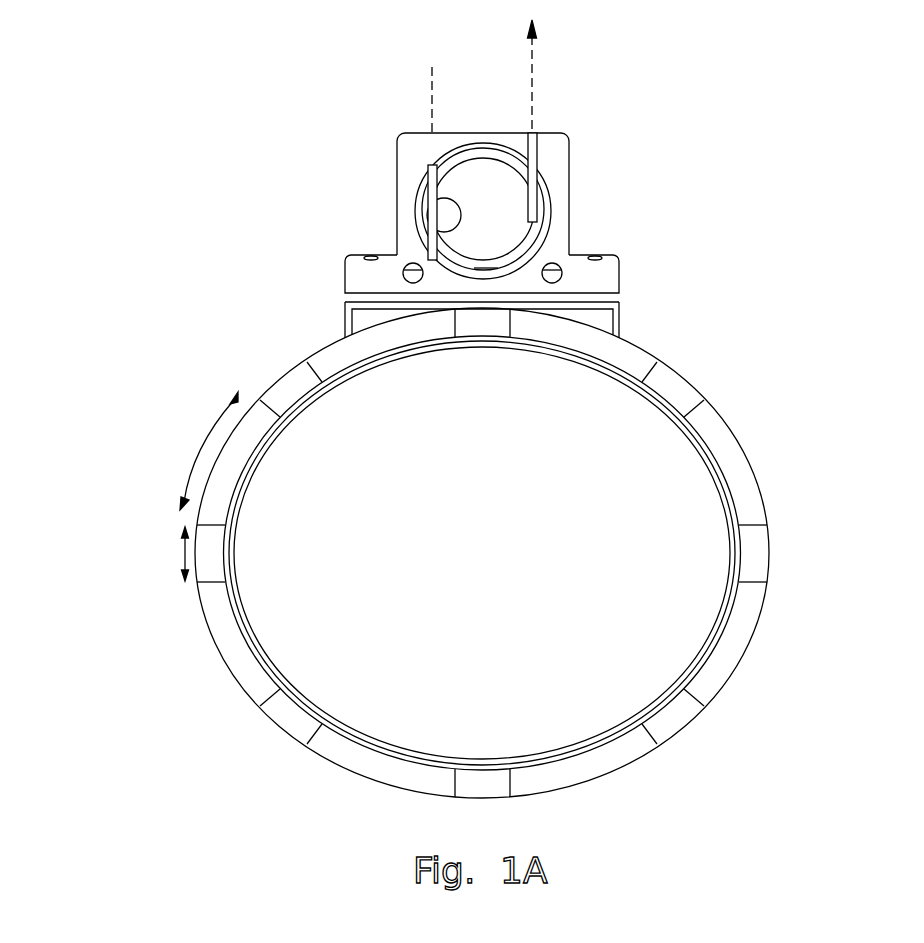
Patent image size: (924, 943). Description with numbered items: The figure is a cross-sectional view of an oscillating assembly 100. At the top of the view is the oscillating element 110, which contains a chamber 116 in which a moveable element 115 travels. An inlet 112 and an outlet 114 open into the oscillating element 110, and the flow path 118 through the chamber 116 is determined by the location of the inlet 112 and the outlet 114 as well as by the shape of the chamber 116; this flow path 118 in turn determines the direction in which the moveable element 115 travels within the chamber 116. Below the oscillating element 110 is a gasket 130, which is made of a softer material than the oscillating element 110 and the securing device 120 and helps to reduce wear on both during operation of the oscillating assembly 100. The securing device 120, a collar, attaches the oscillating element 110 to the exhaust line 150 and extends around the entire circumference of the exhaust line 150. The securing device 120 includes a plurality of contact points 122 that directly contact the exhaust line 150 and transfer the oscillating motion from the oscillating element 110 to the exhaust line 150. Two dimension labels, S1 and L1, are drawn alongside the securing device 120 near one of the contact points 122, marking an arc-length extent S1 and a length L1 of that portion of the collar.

The oscillating assembly 100 is at (478, 409).
The oscillating element 110 is at (476, 156).
The inlet 112 is at (430, 132).
The outlet 114 is at (537, 132).
The moveable element 115 is at (445, 215).
The chamber 116 is at (490, 213).
The flow path 118 is at (473, 263).
The securing device 120 is at (494, 553).
The contact points 122 is at (293, 392).
The gasket 130 is at (615, 297).
The exhaust line 150 is at (718, 470).
The segment arc length S1 is at (206, 451).
The segment length L1 is at (167, 554).